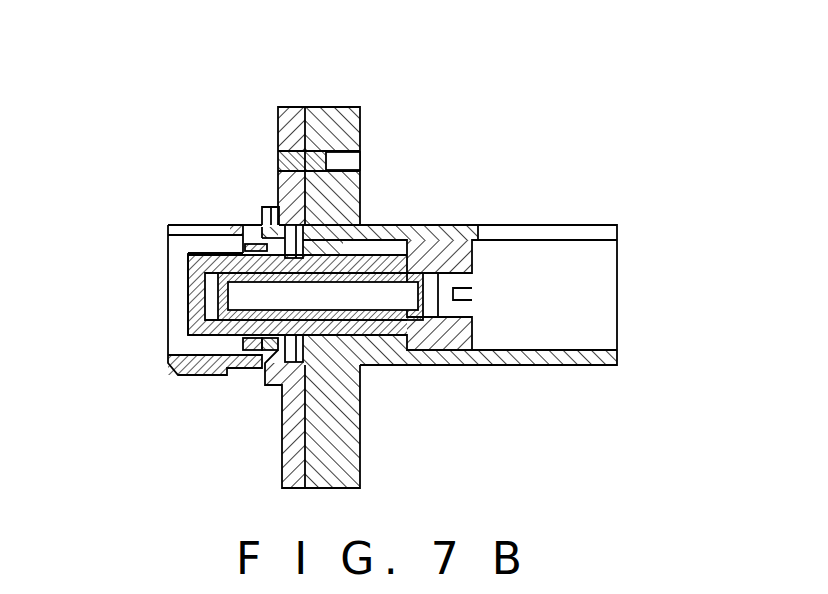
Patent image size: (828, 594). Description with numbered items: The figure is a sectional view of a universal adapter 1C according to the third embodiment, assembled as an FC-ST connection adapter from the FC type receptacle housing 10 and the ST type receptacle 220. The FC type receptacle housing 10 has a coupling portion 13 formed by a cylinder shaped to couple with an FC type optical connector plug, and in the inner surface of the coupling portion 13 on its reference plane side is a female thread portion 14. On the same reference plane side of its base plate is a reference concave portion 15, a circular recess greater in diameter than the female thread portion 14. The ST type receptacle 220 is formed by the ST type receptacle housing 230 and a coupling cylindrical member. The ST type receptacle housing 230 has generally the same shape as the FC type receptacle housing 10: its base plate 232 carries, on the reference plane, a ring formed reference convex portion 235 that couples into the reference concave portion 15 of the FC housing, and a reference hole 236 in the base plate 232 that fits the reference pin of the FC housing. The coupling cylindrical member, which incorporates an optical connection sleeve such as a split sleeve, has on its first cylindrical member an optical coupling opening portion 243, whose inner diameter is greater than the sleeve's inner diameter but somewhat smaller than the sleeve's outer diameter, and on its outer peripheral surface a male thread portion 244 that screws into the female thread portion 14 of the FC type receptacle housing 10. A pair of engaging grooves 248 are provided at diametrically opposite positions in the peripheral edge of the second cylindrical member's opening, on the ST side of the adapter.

The universal adapter 1C is at (168, 150).
The FC type receptacle housing 10 is at (262, 192).
The coupling portion 13 is at (187, 376).
The female thread portion 14 is at (243, 360).
The reference concave portion 15 is at (268, 221).
The ST type receptacle 220 is at (398, 212).
The ST type receptacle housing 230 is at (558, 357).
The base plate 232 is at (323, 118).
The reference convex portion 235 is at (281, 422).
The reference hole 236 is at (347, 163).
The optical coupling opening portion 243 is at (189, 308).
The male thread portion 244 is at (263, 357).
The engaging groove 248 is at (458, 297).